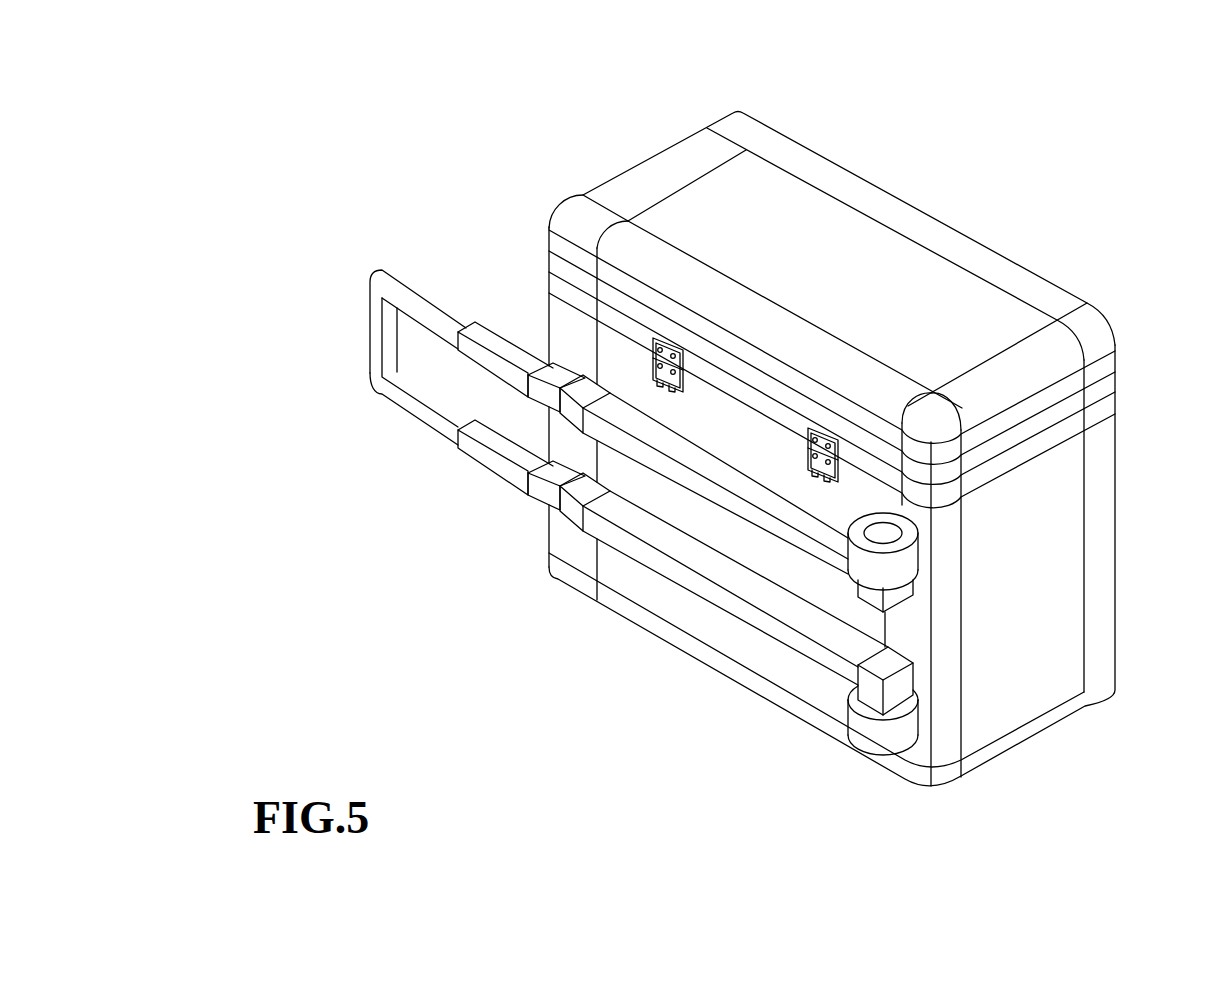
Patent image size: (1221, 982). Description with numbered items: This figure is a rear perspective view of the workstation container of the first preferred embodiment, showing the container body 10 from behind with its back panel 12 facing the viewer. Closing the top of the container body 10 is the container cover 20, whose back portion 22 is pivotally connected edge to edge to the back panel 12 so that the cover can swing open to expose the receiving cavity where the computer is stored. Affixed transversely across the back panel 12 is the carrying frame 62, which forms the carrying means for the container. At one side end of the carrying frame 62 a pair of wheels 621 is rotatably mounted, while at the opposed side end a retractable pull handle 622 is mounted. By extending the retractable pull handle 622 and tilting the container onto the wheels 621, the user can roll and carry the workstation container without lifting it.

The container body 10 is at (1084, 554).
The back panel 12 is at (578, 345).
The container cover 20 is at (968, 292).
The back portion 22 is at (590, 227).
The carrying frame 62 is at (320, 540).
The wheels 621 is at (933, 607).
The retractable pull handle 622 is at (500, 463).